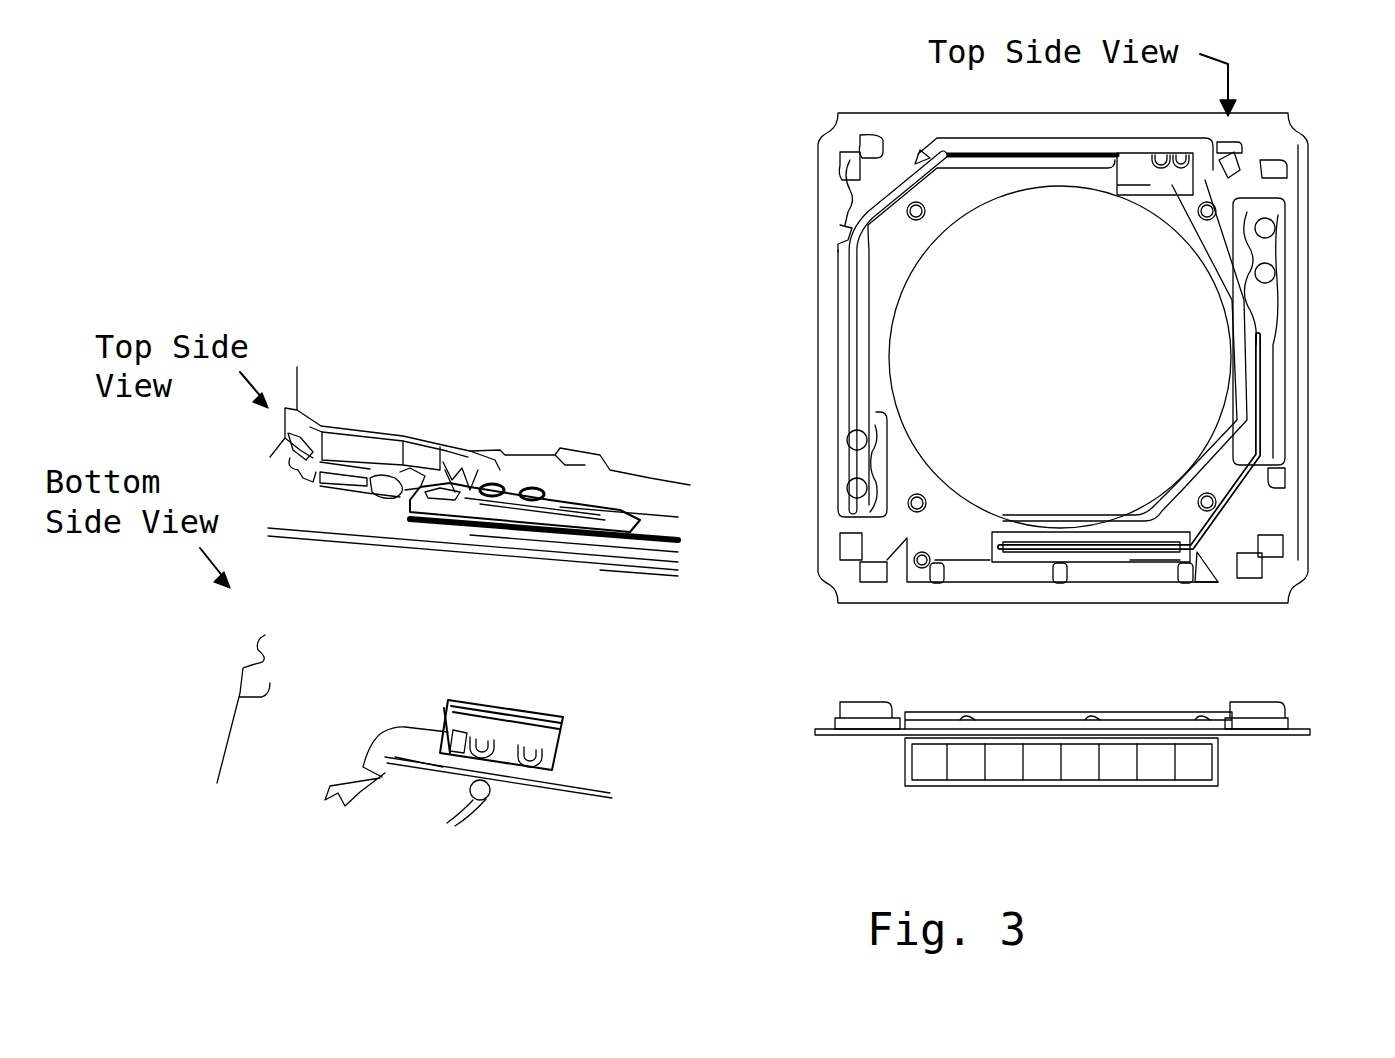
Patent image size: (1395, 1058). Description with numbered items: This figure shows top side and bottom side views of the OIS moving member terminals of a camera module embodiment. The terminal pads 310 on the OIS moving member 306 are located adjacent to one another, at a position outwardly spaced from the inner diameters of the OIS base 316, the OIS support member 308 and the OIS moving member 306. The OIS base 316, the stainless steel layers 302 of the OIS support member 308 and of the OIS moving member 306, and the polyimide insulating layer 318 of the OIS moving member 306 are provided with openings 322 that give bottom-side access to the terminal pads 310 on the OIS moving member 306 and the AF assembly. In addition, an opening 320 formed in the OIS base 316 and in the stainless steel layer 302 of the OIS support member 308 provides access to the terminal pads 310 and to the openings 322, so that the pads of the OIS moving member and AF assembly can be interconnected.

The stainless steel layer 302 is at (945, 510).
The OIS moving member 306 is at (1278, 697).
The OIS support member 308 is at (1315, 752).
The terminal pads 310 is at (1178, 168).
The OIS base 316 is at (275, 750).
The polyimide insulating layer 318 is at (1183, 175).
The opening 320 is at (507, 512).
The openings 322 is at (530, 748).